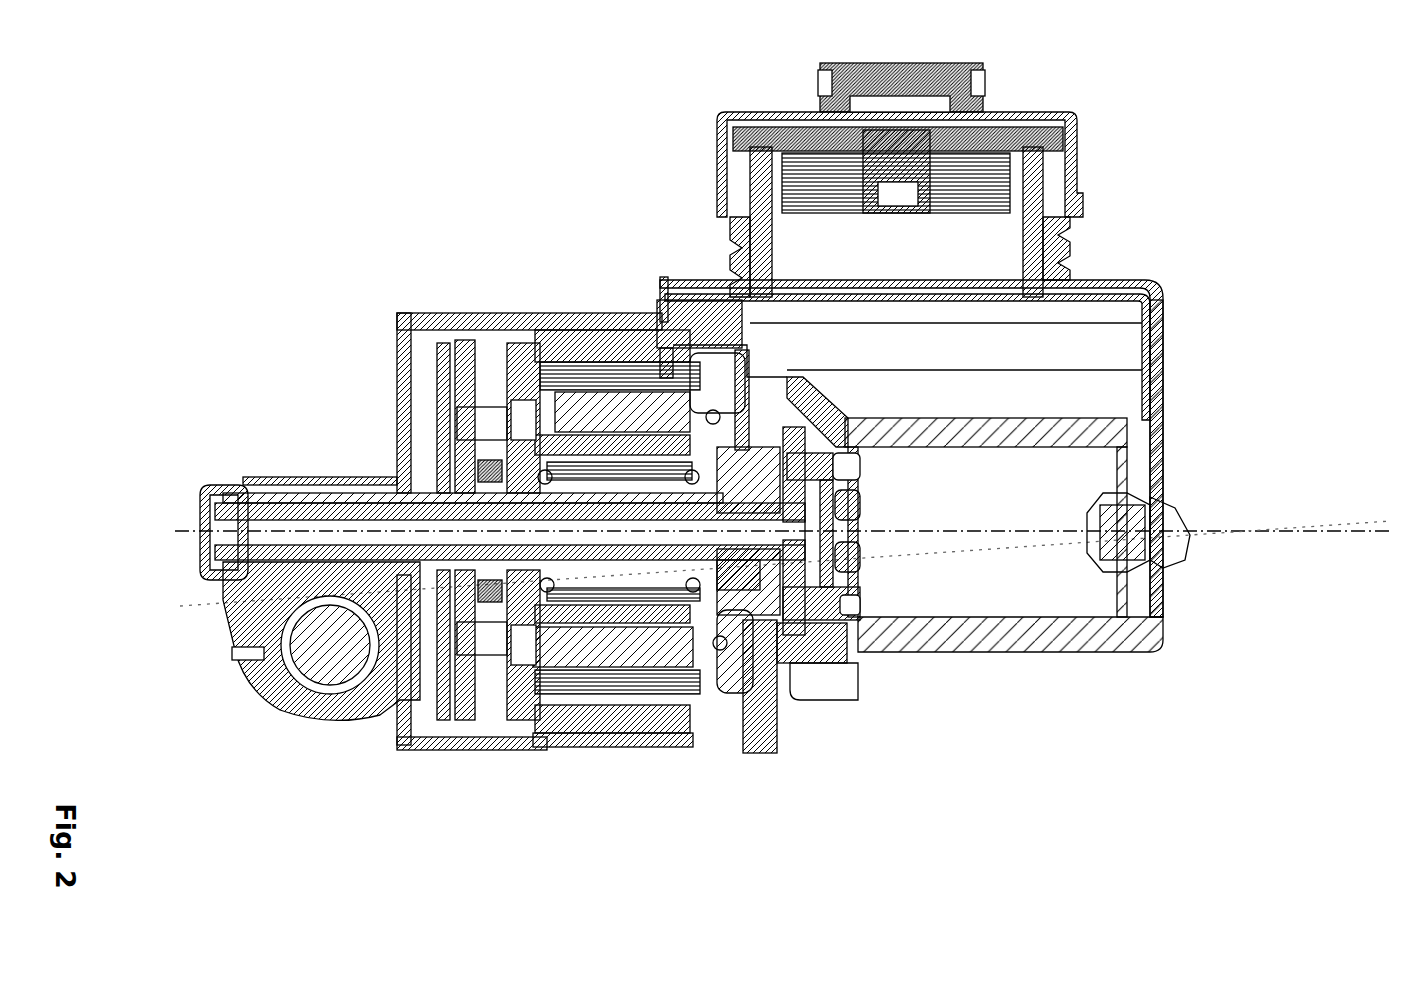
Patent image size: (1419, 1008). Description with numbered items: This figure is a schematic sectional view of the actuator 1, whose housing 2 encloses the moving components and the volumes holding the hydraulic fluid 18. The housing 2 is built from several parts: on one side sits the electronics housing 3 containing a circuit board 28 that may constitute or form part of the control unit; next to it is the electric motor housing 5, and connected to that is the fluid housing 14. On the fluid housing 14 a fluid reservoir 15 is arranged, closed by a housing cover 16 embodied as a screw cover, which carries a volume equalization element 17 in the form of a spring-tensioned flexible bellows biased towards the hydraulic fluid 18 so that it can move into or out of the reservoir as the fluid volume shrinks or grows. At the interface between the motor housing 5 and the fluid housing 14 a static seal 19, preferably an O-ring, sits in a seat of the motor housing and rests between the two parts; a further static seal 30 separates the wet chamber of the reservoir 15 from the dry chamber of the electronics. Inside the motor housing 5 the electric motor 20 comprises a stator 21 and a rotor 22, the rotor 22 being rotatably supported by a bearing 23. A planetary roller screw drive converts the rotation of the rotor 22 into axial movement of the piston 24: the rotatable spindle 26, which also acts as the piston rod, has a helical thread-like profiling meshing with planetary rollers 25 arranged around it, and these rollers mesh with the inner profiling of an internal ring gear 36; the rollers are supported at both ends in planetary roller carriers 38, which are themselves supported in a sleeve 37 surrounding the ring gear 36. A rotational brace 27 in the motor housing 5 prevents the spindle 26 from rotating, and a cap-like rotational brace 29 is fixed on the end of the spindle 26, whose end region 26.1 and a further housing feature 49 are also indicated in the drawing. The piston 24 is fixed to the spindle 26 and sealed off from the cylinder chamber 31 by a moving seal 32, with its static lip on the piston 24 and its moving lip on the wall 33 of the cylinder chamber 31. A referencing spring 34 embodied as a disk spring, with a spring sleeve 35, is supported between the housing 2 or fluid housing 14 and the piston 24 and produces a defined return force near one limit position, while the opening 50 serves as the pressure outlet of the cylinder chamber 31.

The actuator 1 is at (1180, 95).
The housing 2 is at (1103, 292).
The electronics housing 3 is at (755, 268).
The electric motor housing 5 is at (462, 345).
The fluid housing 14 is at (1160, 420).
The fluid reservoir 15 is at (1050, 302).
The housing cover 16 is at (1057, 130).
The volume equalization element 17 is at (959, 171).
The hydraulic fluid 18 is at (1083, 327).
The seal 19 is at (663, 287).
The electric motor 20 is at (617, 765).
The stator 21 is at (540, 713).
The rotor 22 is at (668, 740).
The bearing 23 is at (752, 722).
The piston 24 is at (867, 620).
The planetary rollers 25 is at (568, 330).
The spindle 26 is at (614, 330).
The shaft 26.1 is at (232, 580).
The rotational brace 27 is at (265, 590).
The circuit board 28 is at (397, 405).
The rotational brace fixed to the spindle 29 is at (237, 483).
The static seal 30 is at (535, 333).
The cylinder chamber 31 is at (937, 538).
The moving seal 32 is at (866, 650).
The wall of the cylinder chamber 33 is at (968, 612).
The referencing spring 34 is at (775, 680).
The spring sleeve 35 is at (790, 682).
The internal ring gear 36 is at (572, 480).
The sleeve 37 is at (540, 475).
The planetary roller carrier 38 is at (513, 605).
The wall 49 is at (820, 432).
The opening 50 is at (1150, 495).